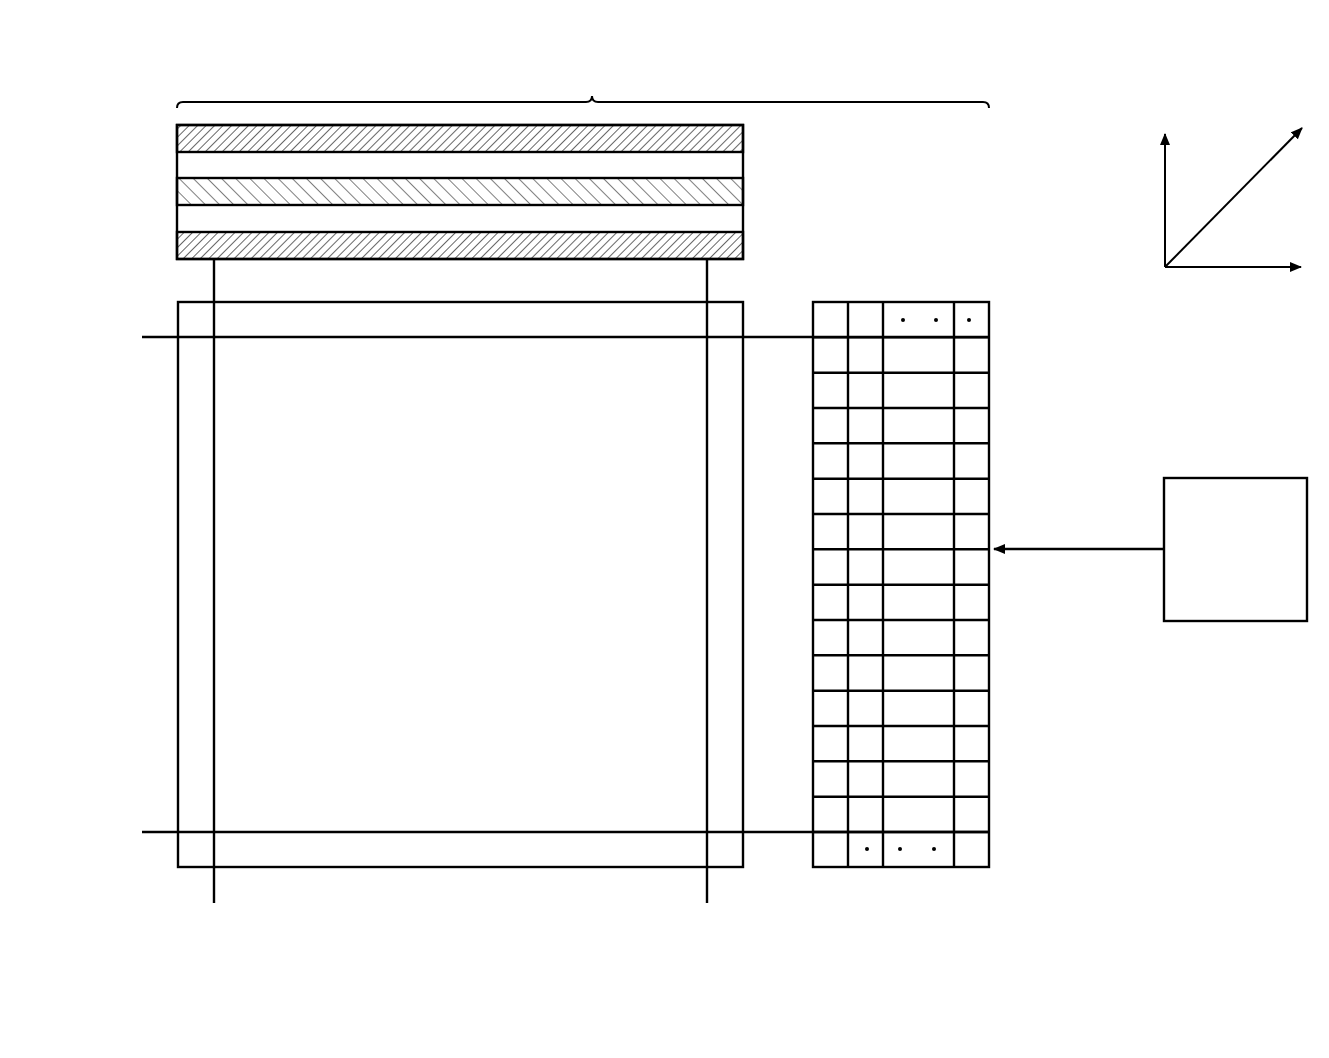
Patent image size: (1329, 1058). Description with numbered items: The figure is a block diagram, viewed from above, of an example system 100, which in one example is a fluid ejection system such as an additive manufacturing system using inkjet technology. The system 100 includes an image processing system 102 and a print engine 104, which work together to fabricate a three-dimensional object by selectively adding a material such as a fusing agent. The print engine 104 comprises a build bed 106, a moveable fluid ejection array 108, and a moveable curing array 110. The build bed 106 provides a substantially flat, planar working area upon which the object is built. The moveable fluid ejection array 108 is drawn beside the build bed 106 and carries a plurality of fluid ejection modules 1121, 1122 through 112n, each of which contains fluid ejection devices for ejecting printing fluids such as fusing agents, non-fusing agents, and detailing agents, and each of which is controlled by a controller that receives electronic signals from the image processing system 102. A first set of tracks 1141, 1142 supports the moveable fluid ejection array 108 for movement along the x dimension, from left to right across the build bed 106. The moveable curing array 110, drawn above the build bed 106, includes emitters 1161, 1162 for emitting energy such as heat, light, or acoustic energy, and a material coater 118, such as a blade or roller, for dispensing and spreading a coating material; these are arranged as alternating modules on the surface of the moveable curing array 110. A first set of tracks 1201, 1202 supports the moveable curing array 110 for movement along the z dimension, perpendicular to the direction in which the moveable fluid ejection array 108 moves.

The system 100 is at (168, 56).
The image processing system 102 is at (1253, 559).
The print engine 104 is at (583, 87).
The build bed 106 is at (480, 595).
The moveable fluid ejection array 108 is at (989, 302).
The moveable curing array 110 is at (743, 125).
The fluid ejection module 1121 is at (830, 310).
The fluid ejection module 1122 is at (870, 310).
The fluid ejection module 112n is at (973, 848).
The track 1141 is at (150, 336).
The track 1142 is at (148, 831).
The emitter 1161 is at (177, 137).
The emitter 1162 is at (177, 242).
The material coater 118 is at (177, 190).
The track 1201 is at (216, 885).
The track 1202 is at (705, 892).